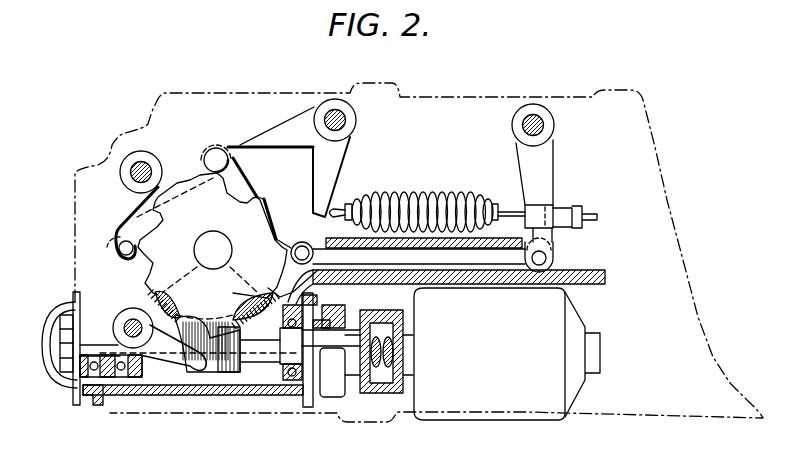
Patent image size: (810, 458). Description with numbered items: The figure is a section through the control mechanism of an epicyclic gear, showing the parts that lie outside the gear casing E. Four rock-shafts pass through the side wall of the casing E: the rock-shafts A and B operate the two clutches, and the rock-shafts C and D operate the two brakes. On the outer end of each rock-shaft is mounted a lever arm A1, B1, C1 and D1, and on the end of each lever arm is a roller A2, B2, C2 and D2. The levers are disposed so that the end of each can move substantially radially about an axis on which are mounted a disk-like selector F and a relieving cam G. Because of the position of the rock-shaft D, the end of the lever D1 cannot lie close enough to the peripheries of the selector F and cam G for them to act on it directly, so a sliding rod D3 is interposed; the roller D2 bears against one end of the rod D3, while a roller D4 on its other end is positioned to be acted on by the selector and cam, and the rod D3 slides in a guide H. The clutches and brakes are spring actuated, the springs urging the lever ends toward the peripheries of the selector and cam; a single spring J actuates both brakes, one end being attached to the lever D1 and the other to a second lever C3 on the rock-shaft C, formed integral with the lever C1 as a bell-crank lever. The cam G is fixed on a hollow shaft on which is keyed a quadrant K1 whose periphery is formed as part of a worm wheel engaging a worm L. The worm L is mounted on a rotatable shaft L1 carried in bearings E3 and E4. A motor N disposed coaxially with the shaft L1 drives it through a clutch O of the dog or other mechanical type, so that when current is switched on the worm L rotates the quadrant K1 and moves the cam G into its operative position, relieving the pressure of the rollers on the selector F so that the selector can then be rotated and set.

The rock-shaft A is at (135, 350).
The lever arm A1 is at (172, 347).
The roller A2 is at (237, 368).
The rock-shaft B is at (138, 152).
The lever arm B1 is at (122, 210).
The roller B2 is at (120, 253).
The rock-shaft C is at (335, 98).
The lever arm C1 is at (288, 128).
The roller C2 is at (200, 150).
The second lever C3 is at (325, 178).
The rock-shaft D is at (537, 108).
The lever arm D1 is at (540, 180).
The roller D2 is at (553, 256).
The sliding rod D3 is at (428, 258).
The roller D4 is at (352, 192).
The gear casing E is at (631, 142).
The bearing E3 is at (82, 372).
The bearing E4 is at (300, 407).
The selector F is at (190, 180).
The relieving cam G is at (247, 180).
The guide H is at (505, 238).
The spring J is at (445, 205).
The quadrant K1 is at (158, 345).
The worm L is at (275, 352).
The shaft L1 is at (283, 382).
The motor N is at (510, 400).
The clutch O is at (380, 395).